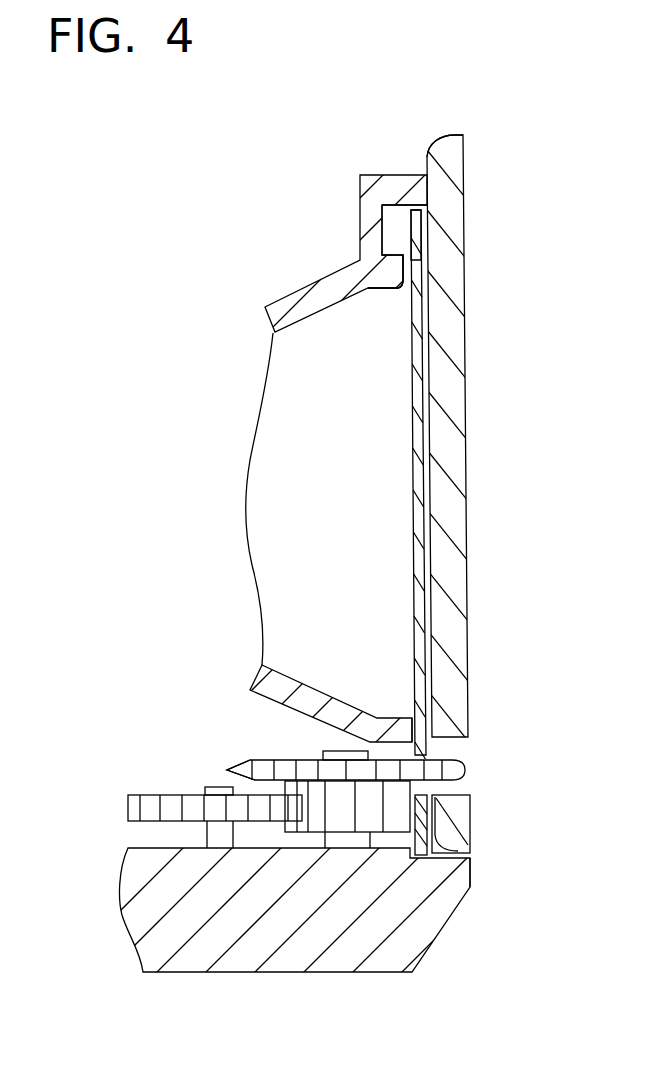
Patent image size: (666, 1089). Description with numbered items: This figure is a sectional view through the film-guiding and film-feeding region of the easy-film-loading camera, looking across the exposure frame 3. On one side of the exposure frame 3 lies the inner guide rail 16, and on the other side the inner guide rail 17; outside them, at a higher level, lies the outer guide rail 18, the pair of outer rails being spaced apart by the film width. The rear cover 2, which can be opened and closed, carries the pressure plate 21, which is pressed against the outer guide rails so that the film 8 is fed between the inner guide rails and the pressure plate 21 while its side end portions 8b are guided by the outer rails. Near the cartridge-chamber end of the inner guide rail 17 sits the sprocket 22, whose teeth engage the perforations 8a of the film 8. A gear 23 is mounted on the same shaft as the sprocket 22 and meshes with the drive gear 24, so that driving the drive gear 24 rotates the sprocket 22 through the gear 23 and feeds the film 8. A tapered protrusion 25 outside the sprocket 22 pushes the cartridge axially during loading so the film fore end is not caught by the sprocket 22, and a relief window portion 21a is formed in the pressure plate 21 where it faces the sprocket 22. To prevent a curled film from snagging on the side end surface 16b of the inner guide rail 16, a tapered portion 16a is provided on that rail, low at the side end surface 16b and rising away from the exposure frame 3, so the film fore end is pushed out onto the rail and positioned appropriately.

The rear cover 2 is at (395, 955).
The exposure frame 3 is at (300, 303).
The film 8 is at (413, 452).
The perforation 8a is at (463, 770).
The side end portion 8b is at (418, 255).
The inner guide rail 16 is at (422, 255).
The tapered portion 16a is at (403, 280).
The side end surface 16b is at (380, 288).
The inner guide rail 17 is at (413, 727).
The outer guide rail 18 is at (428, 188).
The pressure plate 21 is at (466, 375).
The relief window portion 21a is at (455, 793).
The sprocket 22 is at (243, 768).
The gear 23 is at (342, 822).
The drive gear 24 is at (128, 805).
The tapered protrusion 25 is at (472, 868).